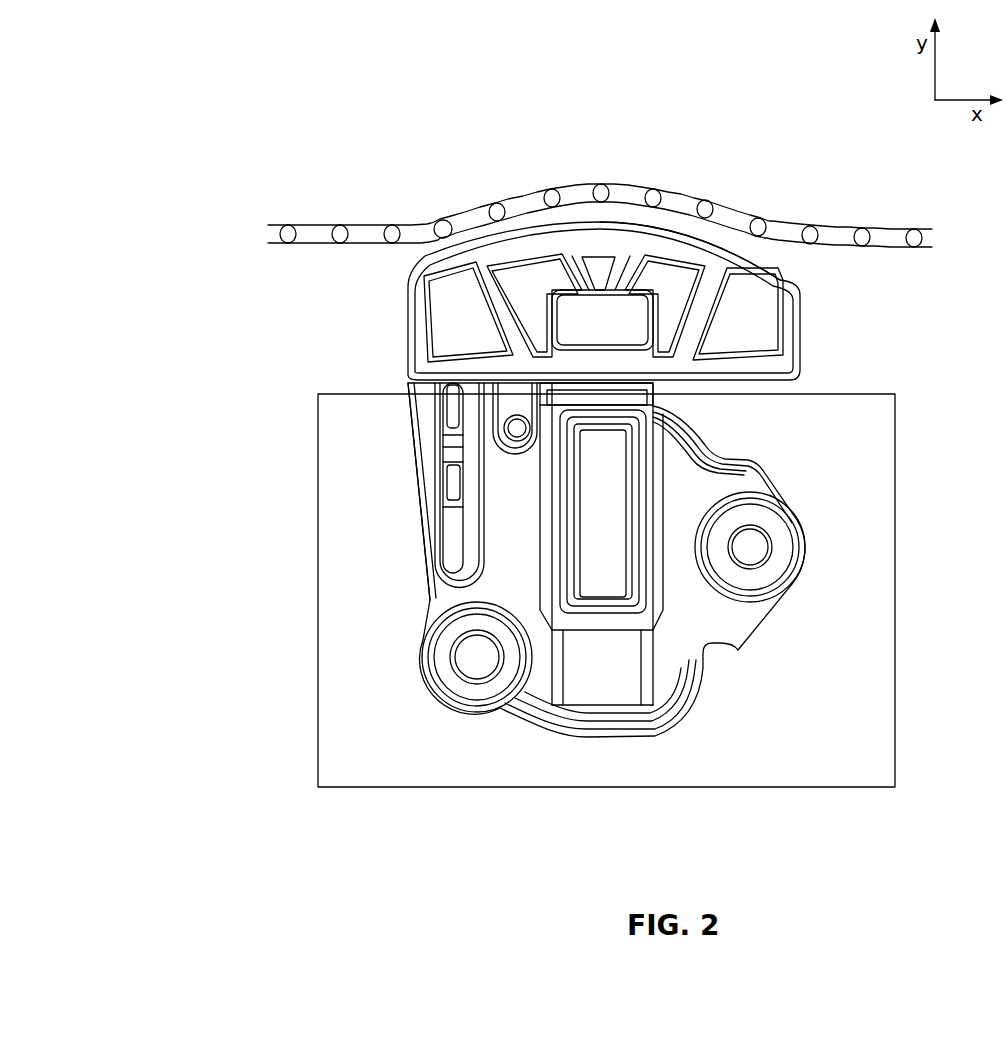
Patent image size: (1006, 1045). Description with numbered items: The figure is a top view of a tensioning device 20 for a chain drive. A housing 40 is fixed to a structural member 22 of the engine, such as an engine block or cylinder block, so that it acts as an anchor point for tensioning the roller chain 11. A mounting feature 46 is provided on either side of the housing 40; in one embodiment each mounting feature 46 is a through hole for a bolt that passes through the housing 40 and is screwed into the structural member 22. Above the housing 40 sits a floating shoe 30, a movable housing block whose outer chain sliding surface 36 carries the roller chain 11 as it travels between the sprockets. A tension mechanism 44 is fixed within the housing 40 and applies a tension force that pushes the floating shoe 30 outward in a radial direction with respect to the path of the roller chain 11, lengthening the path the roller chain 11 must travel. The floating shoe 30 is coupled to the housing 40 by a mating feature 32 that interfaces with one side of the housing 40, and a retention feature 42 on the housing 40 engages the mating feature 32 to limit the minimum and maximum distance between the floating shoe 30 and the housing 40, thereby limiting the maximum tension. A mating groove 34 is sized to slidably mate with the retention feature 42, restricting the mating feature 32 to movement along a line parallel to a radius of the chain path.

The roller chain 11 is at (677, 193).
The tensioning device 20 is at (223, 76).
The structural member 22 is at (895, 700).
The floating shoe 30 is at (800, 372).
The mating feature 32 is at (410, 412).
The mating groove 34 is at (455, 549).
The chain sliding surface 36 is at (744, 236).
The housing 40 is at (753, 620).
The retention feature 42 is at (447, 479).
The tension mechanism 44 is at (640, 393).
The mounting feature 46 is at (772, 547).